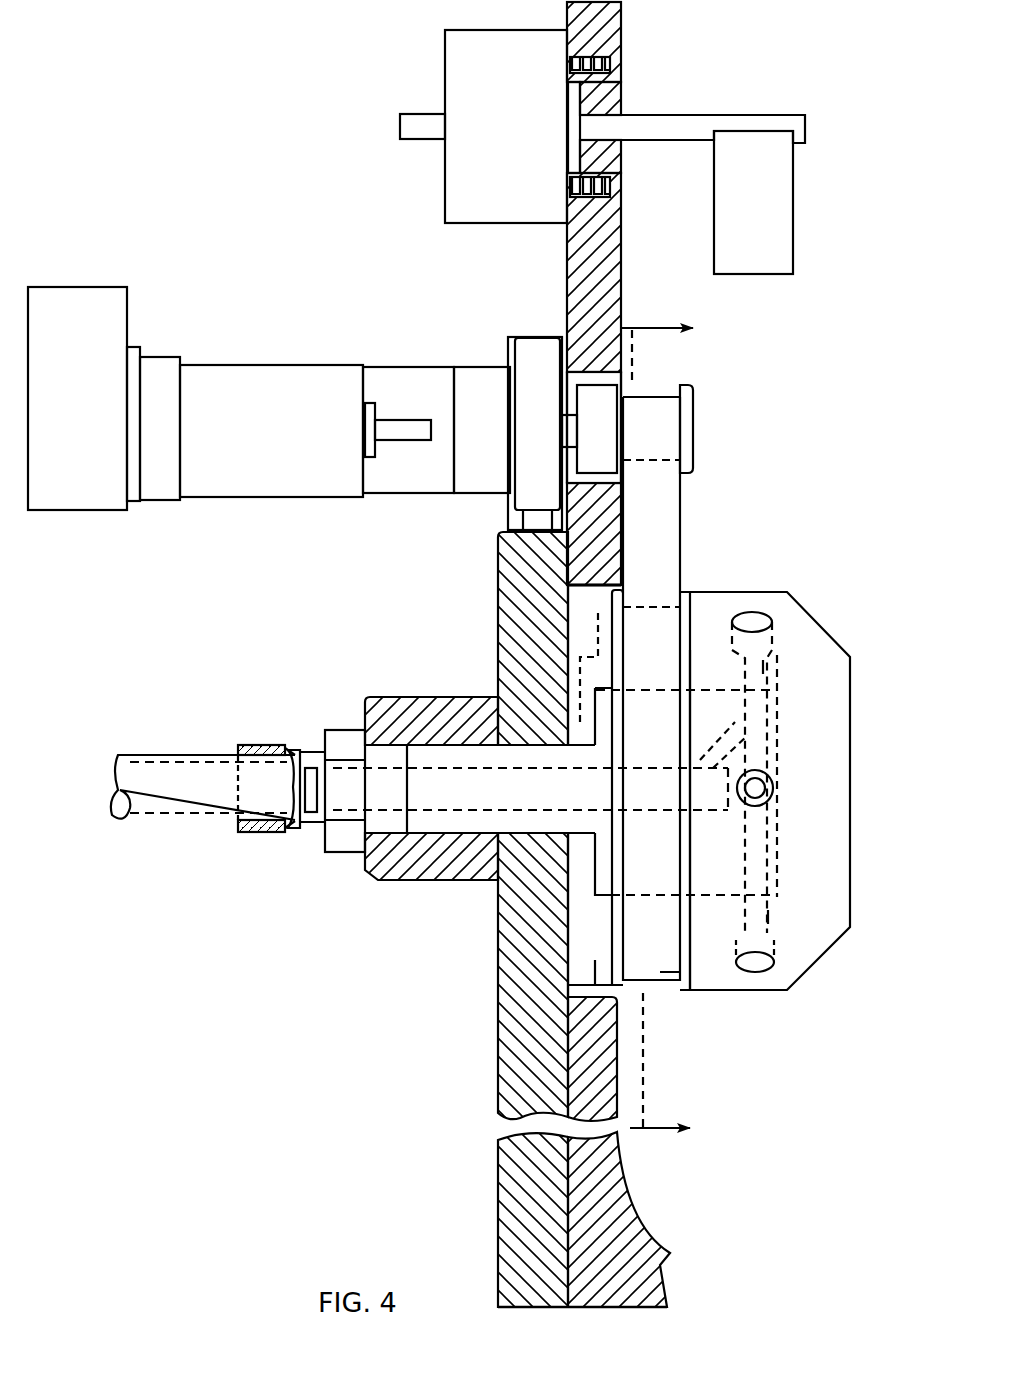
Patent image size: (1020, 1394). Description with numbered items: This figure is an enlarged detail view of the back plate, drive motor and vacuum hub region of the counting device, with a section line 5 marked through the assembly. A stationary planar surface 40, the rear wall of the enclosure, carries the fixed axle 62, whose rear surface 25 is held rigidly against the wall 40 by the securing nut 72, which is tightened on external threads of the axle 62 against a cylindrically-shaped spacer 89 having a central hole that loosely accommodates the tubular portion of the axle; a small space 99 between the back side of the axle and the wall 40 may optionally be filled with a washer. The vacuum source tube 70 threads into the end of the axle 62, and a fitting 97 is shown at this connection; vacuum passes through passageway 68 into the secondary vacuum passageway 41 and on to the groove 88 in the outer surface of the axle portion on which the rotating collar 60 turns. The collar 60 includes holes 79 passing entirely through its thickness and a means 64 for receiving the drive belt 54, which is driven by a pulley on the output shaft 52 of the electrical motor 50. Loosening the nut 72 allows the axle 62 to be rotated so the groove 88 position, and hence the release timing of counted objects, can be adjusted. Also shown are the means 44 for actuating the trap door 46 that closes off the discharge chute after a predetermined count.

The stationary planar surface 40 is at (498, 1142).
The means for actuating trap door 44 is at (486, 181).
The trap door 46 is at (735, 221).
The electrical motor 50 is at (258, 463).
The output shaft 52 is at (695, 424).
The drive belt 54 is at (662, 519).
The rear surface 25 is at (594, 712).
The space 99 is at (587, 870).
The rotating collar 60 is at (815, 603).
The groove 88 is at (755, 845).
The holes 79 is at (763, 667).
The secondary vacuum passageway 41 is at (727, 727).
The means for receiving a drive belt 64 is at (688, 993).
The passageway 68 is at (457, 790).
The cylindrically-shaped spacer 89 is at (390, 878).
The securing nut 72 is at (343, 738).
The fixed axle 62 is at (292, 836).
The threaded sleeve 97 is at (252, 746).
The vacuum source tube 70 is at (181, 752).
The section line 5- 5 is at (628, 319).